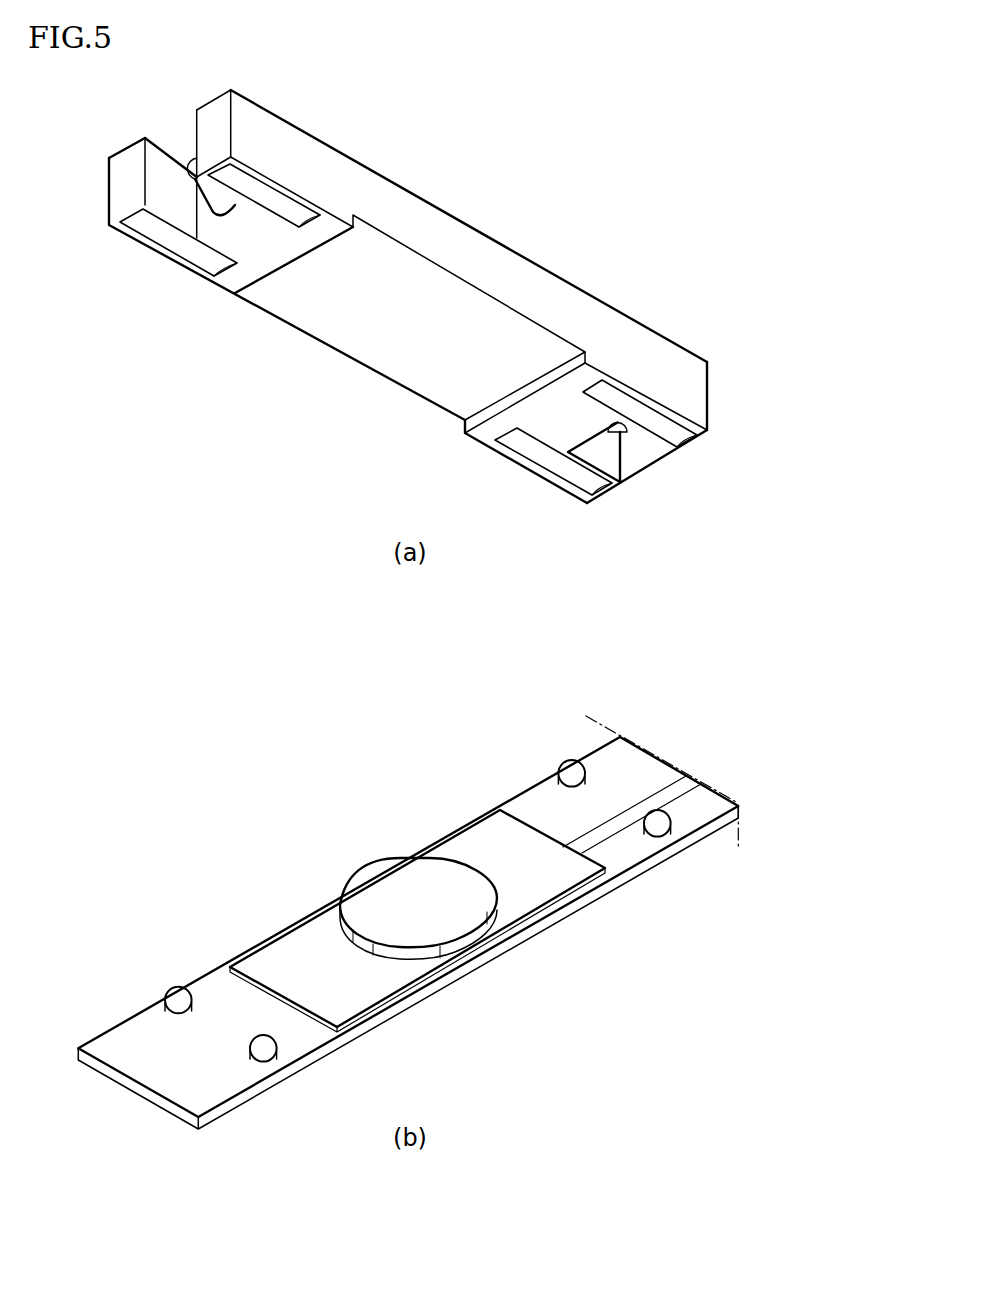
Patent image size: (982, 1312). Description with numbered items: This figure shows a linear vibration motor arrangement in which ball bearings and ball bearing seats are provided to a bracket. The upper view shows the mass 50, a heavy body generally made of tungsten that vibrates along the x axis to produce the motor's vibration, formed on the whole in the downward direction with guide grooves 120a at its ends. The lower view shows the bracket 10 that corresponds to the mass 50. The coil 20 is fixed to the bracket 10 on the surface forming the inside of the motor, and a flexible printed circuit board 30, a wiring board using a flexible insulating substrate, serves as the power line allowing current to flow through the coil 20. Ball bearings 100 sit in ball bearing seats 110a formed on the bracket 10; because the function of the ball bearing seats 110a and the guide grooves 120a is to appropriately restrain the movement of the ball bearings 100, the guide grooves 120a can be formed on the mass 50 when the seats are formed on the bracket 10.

The mass 50 is at (408, 342).
The guide groove 120a is at (310, 222).
The flexible printed circuit board (FPCB) 30 is at (684, 778).
The bracket 10 is at (350, 890).
The coil 20 is at (464, 943).
The ball bearing 100 is at (572, 758).
The ball bearing seat 110a is at (577, 787).